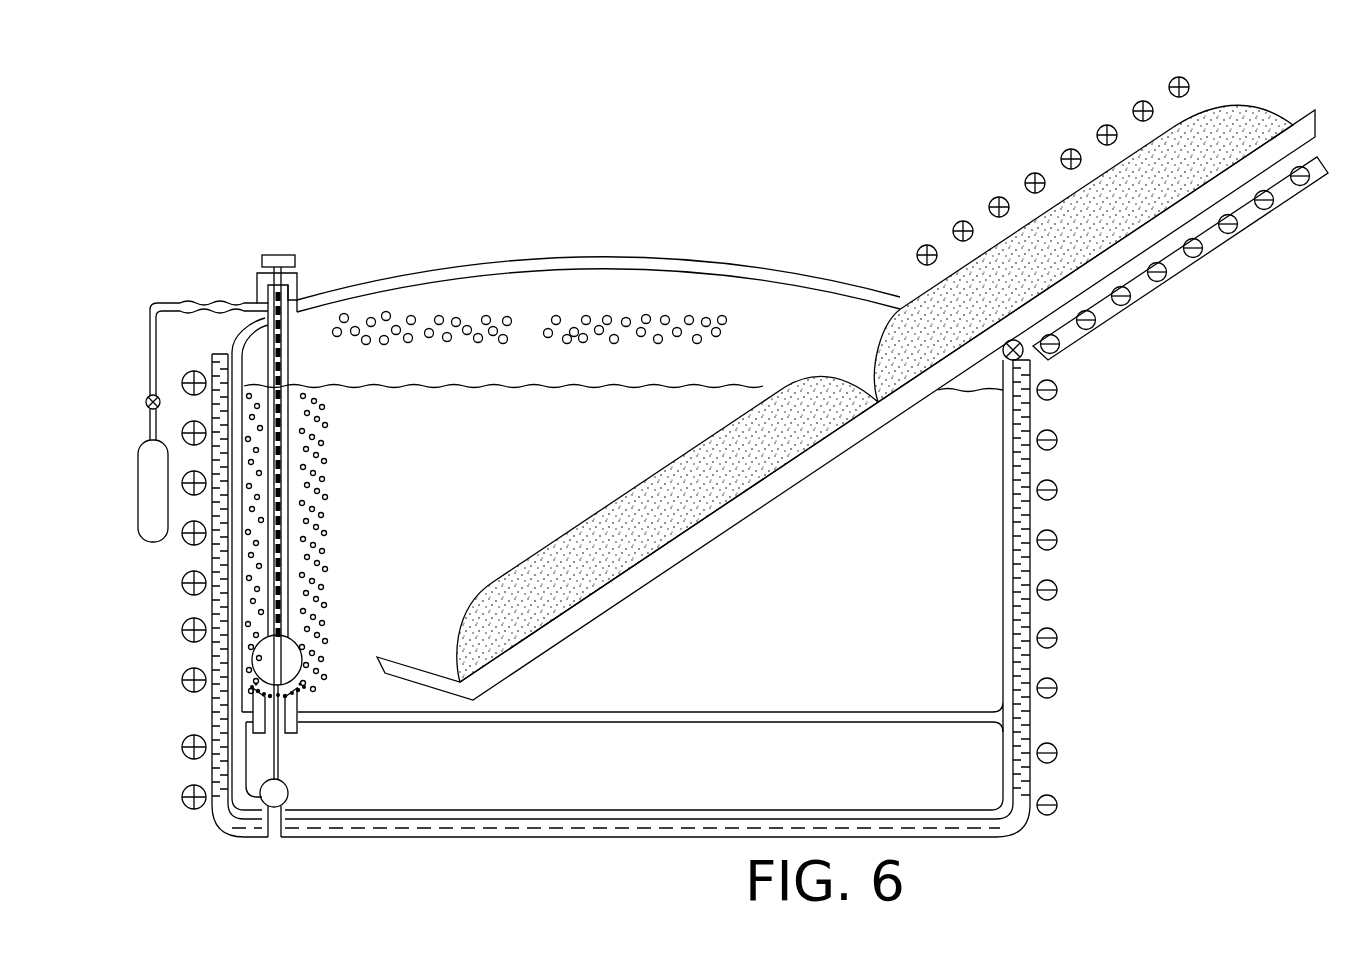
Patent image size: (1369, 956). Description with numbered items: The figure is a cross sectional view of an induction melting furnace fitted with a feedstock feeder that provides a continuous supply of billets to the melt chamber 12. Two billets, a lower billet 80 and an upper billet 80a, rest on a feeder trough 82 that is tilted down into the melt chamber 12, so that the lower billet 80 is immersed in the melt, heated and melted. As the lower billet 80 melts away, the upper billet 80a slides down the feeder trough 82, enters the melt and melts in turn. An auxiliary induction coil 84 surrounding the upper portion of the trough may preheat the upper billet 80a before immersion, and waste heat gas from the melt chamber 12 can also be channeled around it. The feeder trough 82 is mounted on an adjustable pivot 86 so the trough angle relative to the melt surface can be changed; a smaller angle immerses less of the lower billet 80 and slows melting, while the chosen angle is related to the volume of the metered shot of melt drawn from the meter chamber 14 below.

The melt chamber 12 is at (735, 648).
The meter chamber 14 is at (668, 787).
The lower billet 80 is at (625, 525).
The upper billet 80a is at (1230, 132).
The feeder trough 82 is at (773, 485).
The auxiliary induction coil 84 is at (1190, 268).
The adjustable pivot 86 is at (1022, 357).